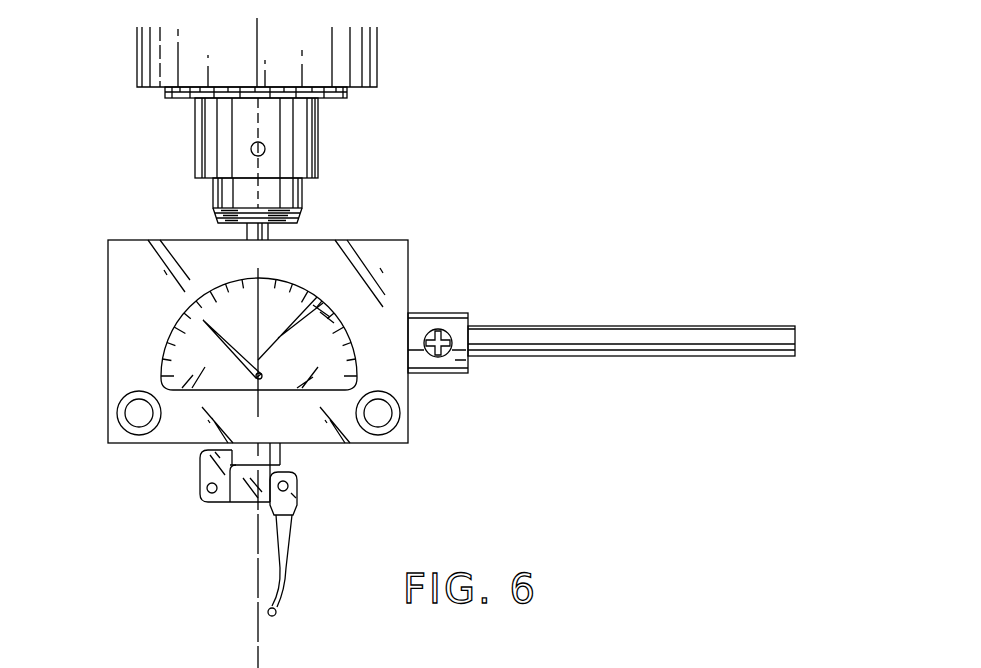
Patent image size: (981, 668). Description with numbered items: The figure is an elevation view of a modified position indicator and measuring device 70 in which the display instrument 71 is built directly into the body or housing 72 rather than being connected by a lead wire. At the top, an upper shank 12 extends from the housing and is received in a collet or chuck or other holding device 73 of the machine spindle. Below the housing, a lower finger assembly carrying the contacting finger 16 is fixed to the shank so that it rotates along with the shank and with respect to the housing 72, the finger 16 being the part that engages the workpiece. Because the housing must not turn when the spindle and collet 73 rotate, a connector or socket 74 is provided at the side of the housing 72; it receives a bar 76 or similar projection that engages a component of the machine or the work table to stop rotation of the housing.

The upper shank 12 is at (242, 129).
The contacting finger 16 is at (285, 566).
The position indicator and measuring device 70 is at (403, 411).
The display instrument 71 is at (145, 365).
The body or housing 72 is at (410, 266).
The collet or chuck or other holding device 73 is at (230, 195).
The connector or socket 74 is at (438, 322).
The bar 76 is at (605, 335).